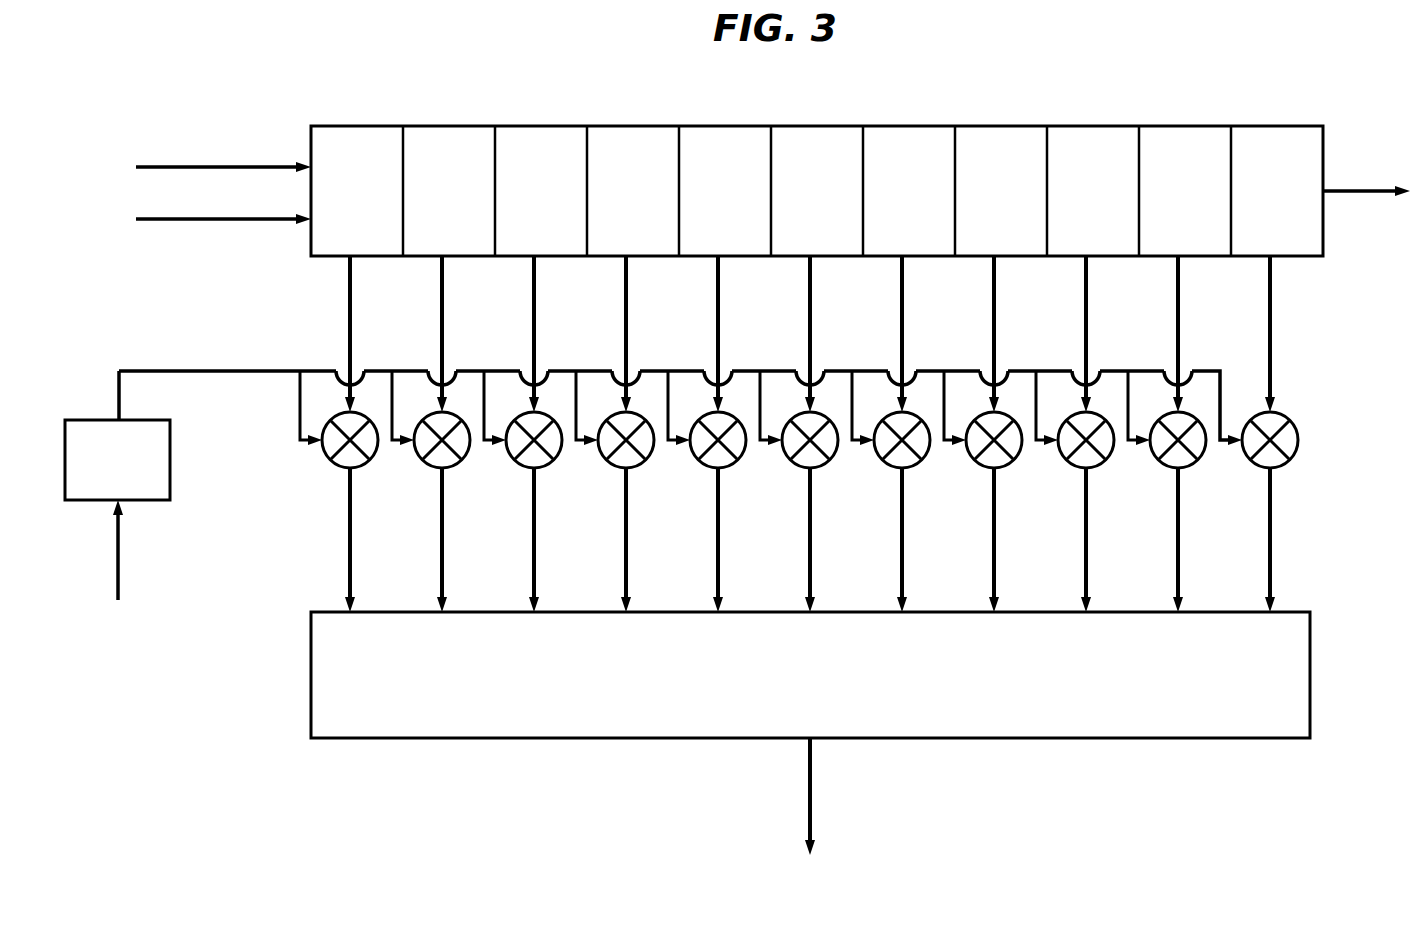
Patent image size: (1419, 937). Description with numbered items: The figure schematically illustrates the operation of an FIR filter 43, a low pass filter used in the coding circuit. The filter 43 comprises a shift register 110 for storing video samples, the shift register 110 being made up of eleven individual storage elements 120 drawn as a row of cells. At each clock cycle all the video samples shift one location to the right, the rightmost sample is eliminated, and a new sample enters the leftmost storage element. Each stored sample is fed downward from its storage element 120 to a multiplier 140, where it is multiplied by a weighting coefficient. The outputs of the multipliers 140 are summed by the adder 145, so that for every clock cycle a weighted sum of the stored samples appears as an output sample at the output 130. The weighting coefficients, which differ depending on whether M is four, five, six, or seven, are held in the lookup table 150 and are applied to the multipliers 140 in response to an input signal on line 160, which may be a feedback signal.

The FIR filter 43 is at (186, 657).
The shift register 110 is at (773, 148).
The storage elements 120 is at (997, 145).
The output 130 is at (808, 778).
The multiplier 140 is at (1296, 430).
The adder 145 is at (1310, 655).
The lookup table 150 is at (168, 478).
The line 160 is at (120, 562).